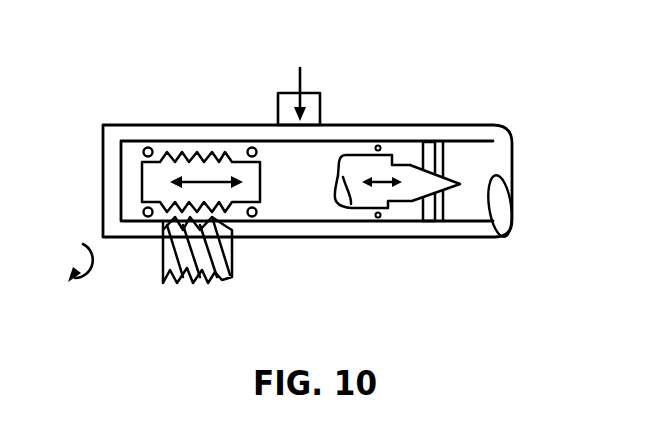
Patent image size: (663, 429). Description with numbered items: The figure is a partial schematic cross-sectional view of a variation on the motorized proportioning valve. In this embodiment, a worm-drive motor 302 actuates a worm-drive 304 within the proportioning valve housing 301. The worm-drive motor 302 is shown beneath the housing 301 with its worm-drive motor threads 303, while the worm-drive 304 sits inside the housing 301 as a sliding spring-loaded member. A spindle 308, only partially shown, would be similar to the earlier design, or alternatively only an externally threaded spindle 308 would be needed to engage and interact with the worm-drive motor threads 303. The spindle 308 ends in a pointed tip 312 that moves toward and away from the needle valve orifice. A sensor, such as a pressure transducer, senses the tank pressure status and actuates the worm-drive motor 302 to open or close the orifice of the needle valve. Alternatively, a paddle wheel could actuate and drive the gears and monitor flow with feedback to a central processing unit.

The proportioning valve housing 301 is at (172, 125).
The worm-drive motor 302 is at (210, 284).
The worm-drive motor threads 303 is at (212, 238).
The worm-drive 304 is at (160, 197).
The spindle 308 is at (403, 165).
The plunger tip 312 is at (456, 164).